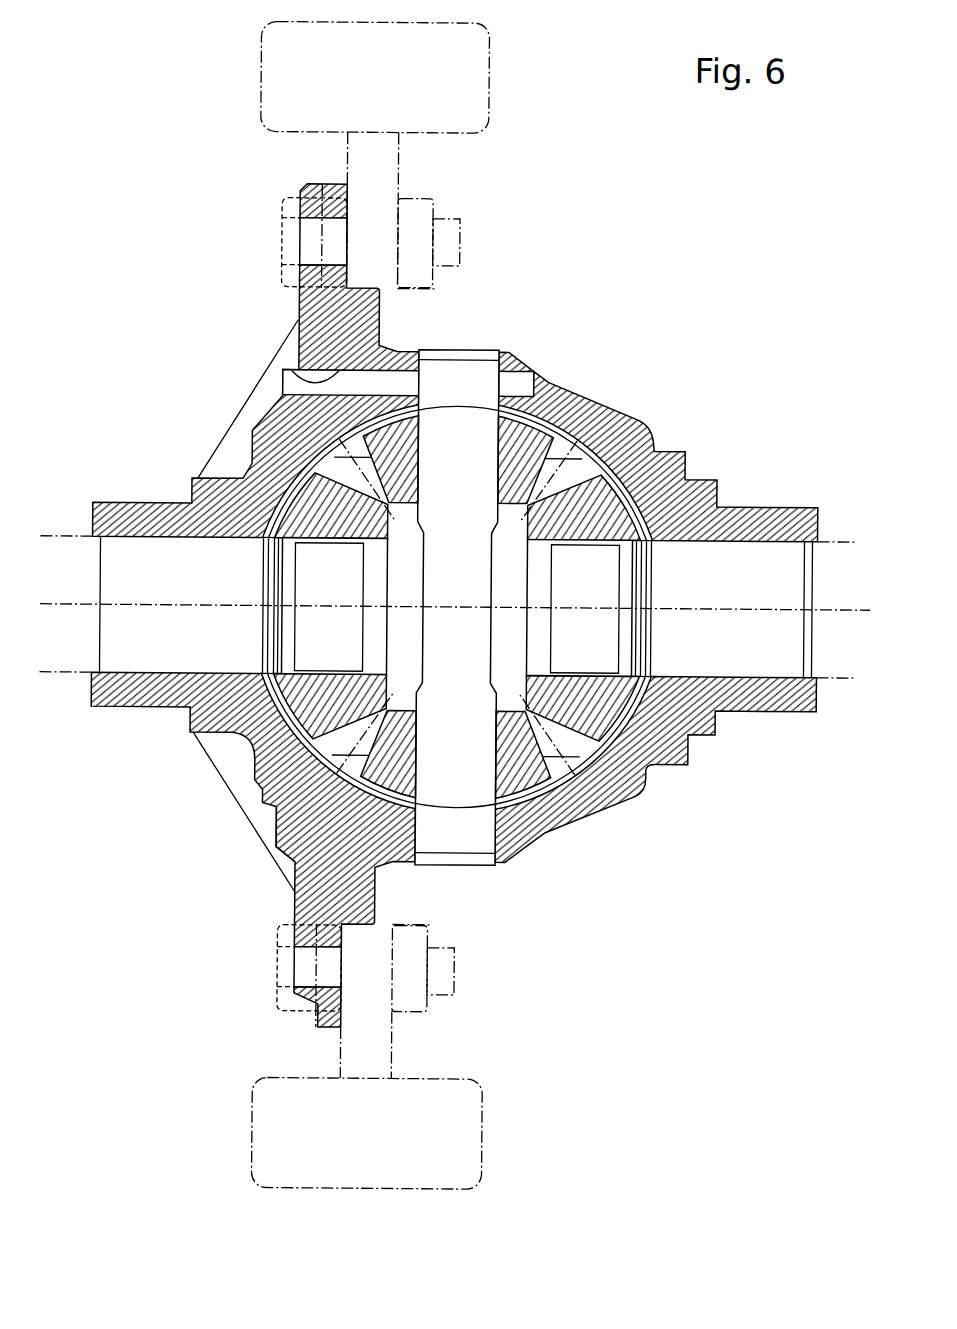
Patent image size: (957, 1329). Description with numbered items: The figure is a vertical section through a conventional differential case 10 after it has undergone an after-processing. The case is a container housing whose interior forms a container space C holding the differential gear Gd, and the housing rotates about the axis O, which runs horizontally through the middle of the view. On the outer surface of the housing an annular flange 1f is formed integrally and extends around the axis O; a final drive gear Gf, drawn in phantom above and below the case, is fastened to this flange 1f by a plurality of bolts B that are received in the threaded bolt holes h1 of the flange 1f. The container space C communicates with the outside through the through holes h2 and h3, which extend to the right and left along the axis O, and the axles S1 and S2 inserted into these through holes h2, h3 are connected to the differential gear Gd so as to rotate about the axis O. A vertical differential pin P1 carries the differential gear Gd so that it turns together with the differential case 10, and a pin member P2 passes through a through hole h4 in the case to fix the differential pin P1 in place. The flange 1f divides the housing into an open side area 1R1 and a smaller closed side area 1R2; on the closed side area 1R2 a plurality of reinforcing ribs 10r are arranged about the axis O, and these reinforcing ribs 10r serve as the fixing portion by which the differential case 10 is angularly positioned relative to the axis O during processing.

The conventional differential case 10 is at (450, 553).
The open side area 1R1 is at (543, 332).
The closed side area 1R2 is at (185, 367).
The annular flange 1f is at (297, 185).
The bolt hole h1 is at (326, 981).
The bolt B is at (431, 208).
The final drive gear Gf is at (486, 77).
The differential pin P1 is at (467, 812).
The pin member P2 is at (391, 381).
The through hole h4 is at (294, 368).
The reinforcing rib 10r is at (256, 422).
The differential gear Gd is at (596, 442).
The through hole h2 is at (740, 570).
The through hole h3 is at (185, 579).
The axle S1 is at (842, 539).
The axle S2 is at (57, 539).
The axis O is at (461, 606).
The container space C is at (296, 804).